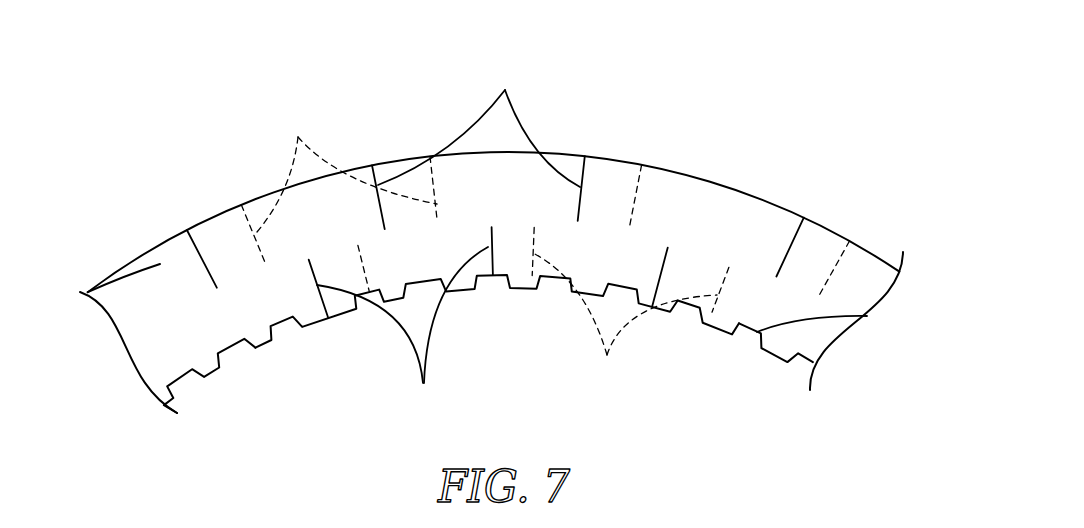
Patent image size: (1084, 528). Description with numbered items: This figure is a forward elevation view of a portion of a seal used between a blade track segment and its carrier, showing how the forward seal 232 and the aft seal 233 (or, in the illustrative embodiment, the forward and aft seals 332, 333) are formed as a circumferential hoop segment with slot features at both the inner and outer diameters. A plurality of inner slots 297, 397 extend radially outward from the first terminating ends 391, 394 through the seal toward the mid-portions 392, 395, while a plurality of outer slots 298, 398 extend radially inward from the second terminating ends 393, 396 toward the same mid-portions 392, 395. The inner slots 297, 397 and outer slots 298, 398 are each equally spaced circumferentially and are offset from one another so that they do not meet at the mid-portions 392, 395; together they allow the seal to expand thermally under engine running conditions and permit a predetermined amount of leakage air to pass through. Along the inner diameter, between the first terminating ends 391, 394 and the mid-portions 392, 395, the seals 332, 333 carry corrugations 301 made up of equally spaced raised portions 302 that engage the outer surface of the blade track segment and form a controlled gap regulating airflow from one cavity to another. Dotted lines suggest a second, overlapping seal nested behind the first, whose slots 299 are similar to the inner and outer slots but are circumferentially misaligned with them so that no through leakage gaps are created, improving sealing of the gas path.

The forward seal 232 is at (524, 220).
The aft seal 233 is at (524, 220).
The forward seal 332 is at (524, 220).
The aft seal 333 is at (675, 147).
The outer slots 298 is at (495, 171).
The outer slots 398 is at (495, 171).
The inner slots 297 is at (488, 324).
The inner slots 397 is at (488, 324).
The slots 299 is at (545, 249).
The second terminating end 393 is at (111, 238).
The second terminating end 396 is at (130, 300).
The mid-portion 392 is at (111, 371).
The mid-portion 395 is at (158, 317).
The first terminating end 391 is at (222, 403).
The first terminating end 394 is at (164, 341).
The raised portions 302 is at (867, 316).
The corrugations 301 is at (743, 337).